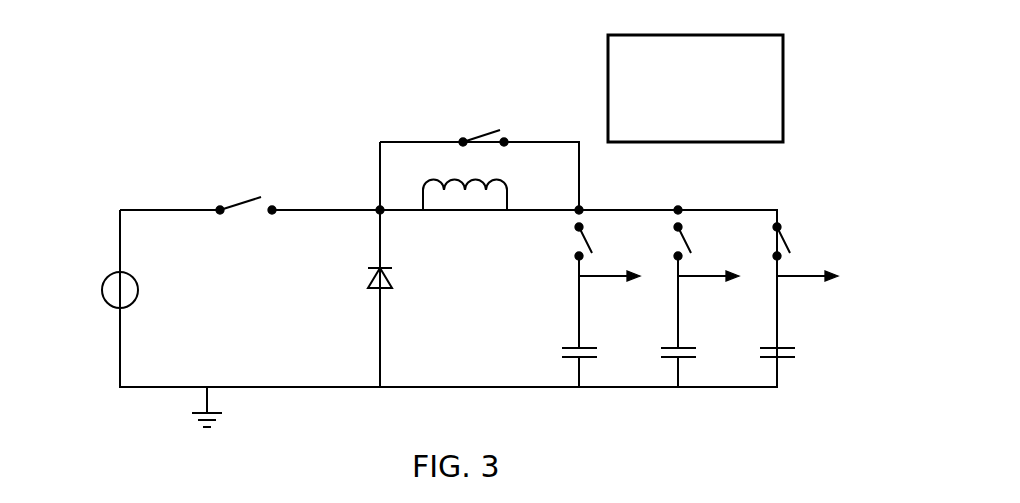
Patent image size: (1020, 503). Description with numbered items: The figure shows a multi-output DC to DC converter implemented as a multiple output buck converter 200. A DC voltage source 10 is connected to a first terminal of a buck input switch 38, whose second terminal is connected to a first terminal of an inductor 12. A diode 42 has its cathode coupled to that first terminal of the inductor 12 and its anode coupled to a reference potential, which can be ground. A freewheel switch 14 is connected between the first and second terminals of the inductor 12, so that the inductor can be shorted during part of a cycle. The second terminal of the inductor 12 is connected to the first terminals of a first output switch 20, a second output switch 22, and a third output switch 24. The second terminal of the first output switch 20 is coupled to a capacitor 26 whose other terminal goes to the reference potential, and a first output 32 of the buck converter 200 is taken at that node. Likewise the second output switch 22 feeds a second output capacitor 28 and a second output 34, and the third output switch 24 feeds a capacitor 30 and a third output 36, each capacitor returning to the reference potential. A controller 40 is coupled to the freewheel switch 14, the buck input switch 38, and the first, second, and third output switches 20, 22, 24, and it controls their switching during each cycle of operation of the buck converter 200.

The DC voltage source 10 is at (102, 290).
The buck input switch 38 is at (242, 204).
The inductor 12 is at (417, 200).
The freewheel switch 14 is at (484, 134).
The diode 42 is at (384, 290).
The controller 40 is at (695, 88).
The first output switch 20 is at (589, 244).
The second output switch 22 is at (688, 244).
The third output switch 24 is at (787, 244).
The first output 32 is at (607, 278).
The second output 34 is at (706, 278).
The third output 36 is at (805, 278).
The capacitor 26 is at (598, 352).
The second output capacitor 28 is at (697, 352).
The capacitor 30 is at (796, 352).
The multiple output buck converter 200 is at (542, 427).